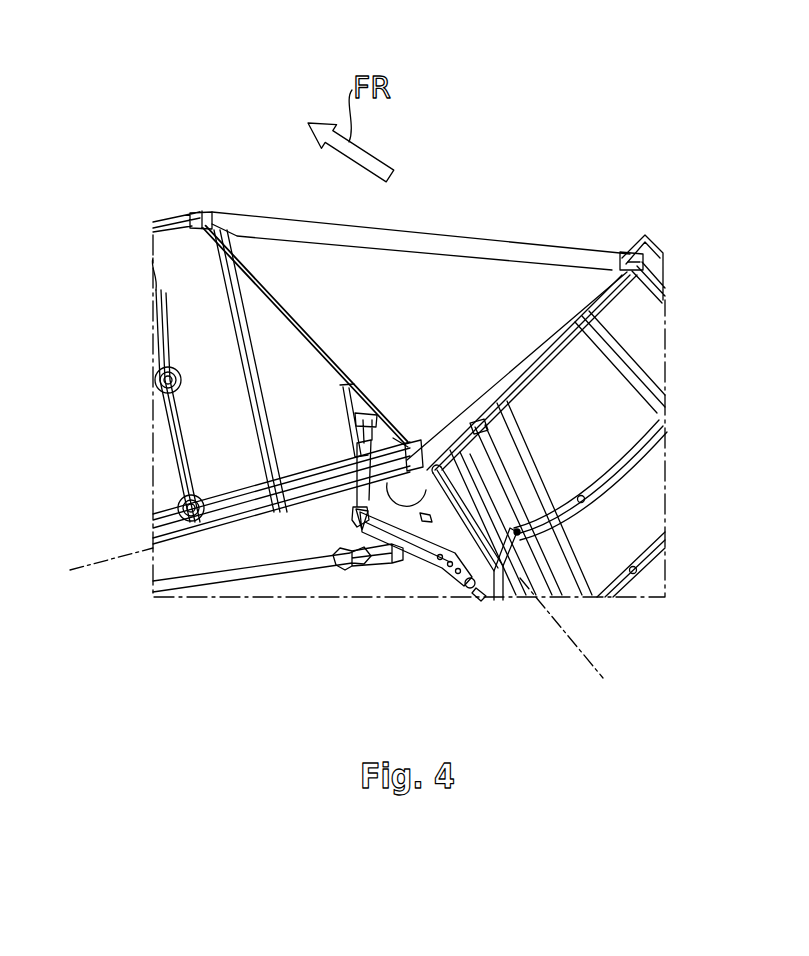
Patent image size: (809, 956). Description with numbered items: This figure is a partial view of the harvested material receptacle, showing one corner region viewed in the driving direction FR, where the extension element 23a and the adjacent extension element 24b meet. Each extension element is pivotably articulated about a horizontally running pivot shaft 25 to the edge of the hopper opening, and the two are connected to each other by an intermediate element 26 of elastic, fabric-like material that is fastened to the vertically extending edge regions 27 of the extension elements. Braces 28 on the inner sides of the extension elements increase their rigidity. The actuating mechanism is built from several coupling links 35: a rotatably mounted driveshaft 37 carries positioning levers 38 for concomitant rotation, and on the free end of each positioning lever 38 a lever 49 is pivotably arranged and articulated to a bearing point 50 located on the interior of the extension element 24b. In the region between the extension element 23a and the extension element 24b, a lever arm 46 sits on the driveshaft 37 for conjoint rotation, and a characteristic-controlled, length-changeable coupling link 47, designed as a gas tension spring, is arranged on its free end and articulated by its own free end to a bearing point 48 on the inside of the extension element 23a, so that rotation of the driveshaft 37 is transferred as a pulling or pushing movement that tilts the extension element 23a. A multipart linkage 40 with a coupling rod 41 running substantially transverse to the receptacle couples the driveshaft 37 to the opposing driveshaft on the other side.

The extension element 23a is at (160, 216).
The extension element 24b is at (665, 247).
The pivot shaft 25 is at (97, 562).
The intermediate element 26 is at (410, 275).
The edge region 27 is at (216, 214).
The brace 28 is at (162, 340).
The coupling link 35 is at (572, 557).
The driveshaft 37 is at (480, 598).
The positioning lever 38 is at (498, 600).
The multipart linkage 40 is at (370, 550).
The coupling rod 41 is at (205, 587).
The lever arm 46 is at (395, 513).
The coupling link 47 is at (345, 493).
The bearing point 48 is at (372, 408).
The lever 49 is at (603, 598).
The bearing point 50 is at (583, 503).